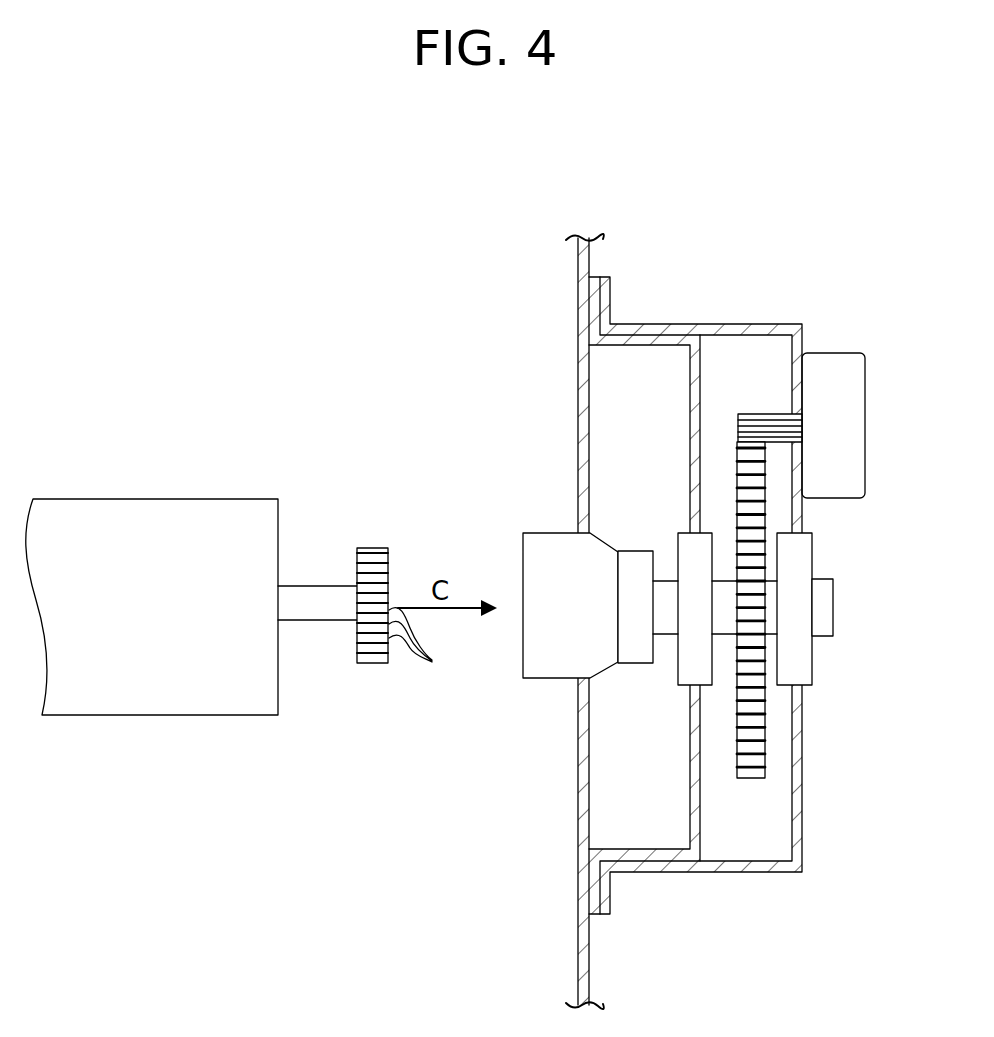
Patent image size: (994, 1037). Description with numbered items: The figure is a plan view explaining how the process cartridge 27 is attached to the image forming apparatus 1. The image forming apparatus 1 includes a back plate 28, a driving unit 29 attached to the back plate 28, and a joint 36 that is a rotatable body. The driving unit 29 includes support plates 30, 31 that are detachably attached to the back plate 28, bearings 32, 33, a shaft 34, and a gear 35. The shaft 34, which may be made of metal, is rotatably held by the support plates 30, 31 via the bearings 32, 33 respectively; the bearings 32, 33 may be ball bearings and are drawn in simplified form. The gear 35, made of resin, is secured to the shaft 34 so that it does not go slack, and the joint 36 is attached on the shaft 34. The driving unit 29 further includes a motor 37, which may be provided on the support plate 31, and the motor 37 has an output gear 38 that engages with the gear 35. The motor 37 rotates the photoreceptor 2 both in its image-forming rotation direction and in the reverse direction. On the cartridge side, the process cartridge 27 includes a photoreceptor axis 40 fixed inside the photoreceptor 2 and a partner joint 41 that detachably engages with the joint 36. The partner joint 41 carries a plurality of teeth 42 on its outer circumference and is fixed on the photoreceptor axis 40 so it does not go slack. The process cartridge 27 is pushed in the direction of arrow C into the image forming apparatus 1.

The image forming apparatus 1 is at (553, 975).
The photoreceptor 2 is at (110, 499).
The process cartridge 27 is at (243, 566).
The back plate 28 is at (578, 444).
The driving unit 29 is at (690, 580).
The support plate 30 is at (700, 815).
The support plate 31 is at (802, 747).
The bearing 32 is at (679, 667).
The bearing 33 is at (812, 662).
The shaft 34 is at (833, 607).
The gear 35 is at (766, 560).
The joint 36 is at (551, 685).
The motor 37 is at (865, 437).
The output gear 38 is at (765, 412).
The photoreceptor axis 40 is at (337, 587).
The partner joint 41 is at (371, 665).
The teeth 42 is at (425, 642).